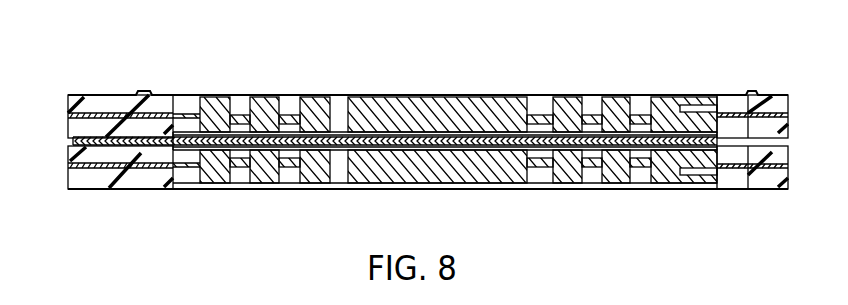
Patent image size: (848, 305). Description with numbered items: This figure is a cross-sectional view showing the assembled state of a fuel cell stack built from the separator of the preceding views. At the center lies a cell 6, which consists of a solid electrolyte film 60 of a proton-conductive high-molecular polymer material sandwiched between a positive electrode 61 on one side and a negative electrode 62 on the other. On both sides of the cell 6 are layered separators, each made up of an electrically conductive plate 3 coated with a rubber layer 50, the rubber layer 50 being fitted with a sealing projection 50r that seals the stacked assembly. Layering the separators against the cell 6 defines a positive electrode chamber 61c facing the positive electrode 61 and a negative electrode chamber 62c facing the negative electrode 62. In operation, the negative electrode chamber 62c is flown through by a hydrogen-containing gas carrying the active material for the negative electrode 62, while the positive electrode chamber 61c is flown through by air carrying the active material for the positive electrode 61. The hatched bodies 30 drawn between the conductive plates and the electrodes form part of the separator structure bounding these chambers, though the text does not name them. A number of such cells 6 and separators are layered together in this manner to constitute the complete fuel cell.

The electrically conductive plate 3 is at (68, 115).
The cell 6 is at (340, 116).
The conductive bump / element 30 is at (290, 124).
The rubber layer 50 is at (97, 101).
The sealing projection 50r is at (148, 92).
The solid electrolyte film 60 is at (369, 146).
The positive electrode 61 is at (408, 132).
The positive electrode chamber 61c is at (248, 120).
The negative electrode 62 is at (408, 151).
The negative electrode chamber 62c is at (248, 163).